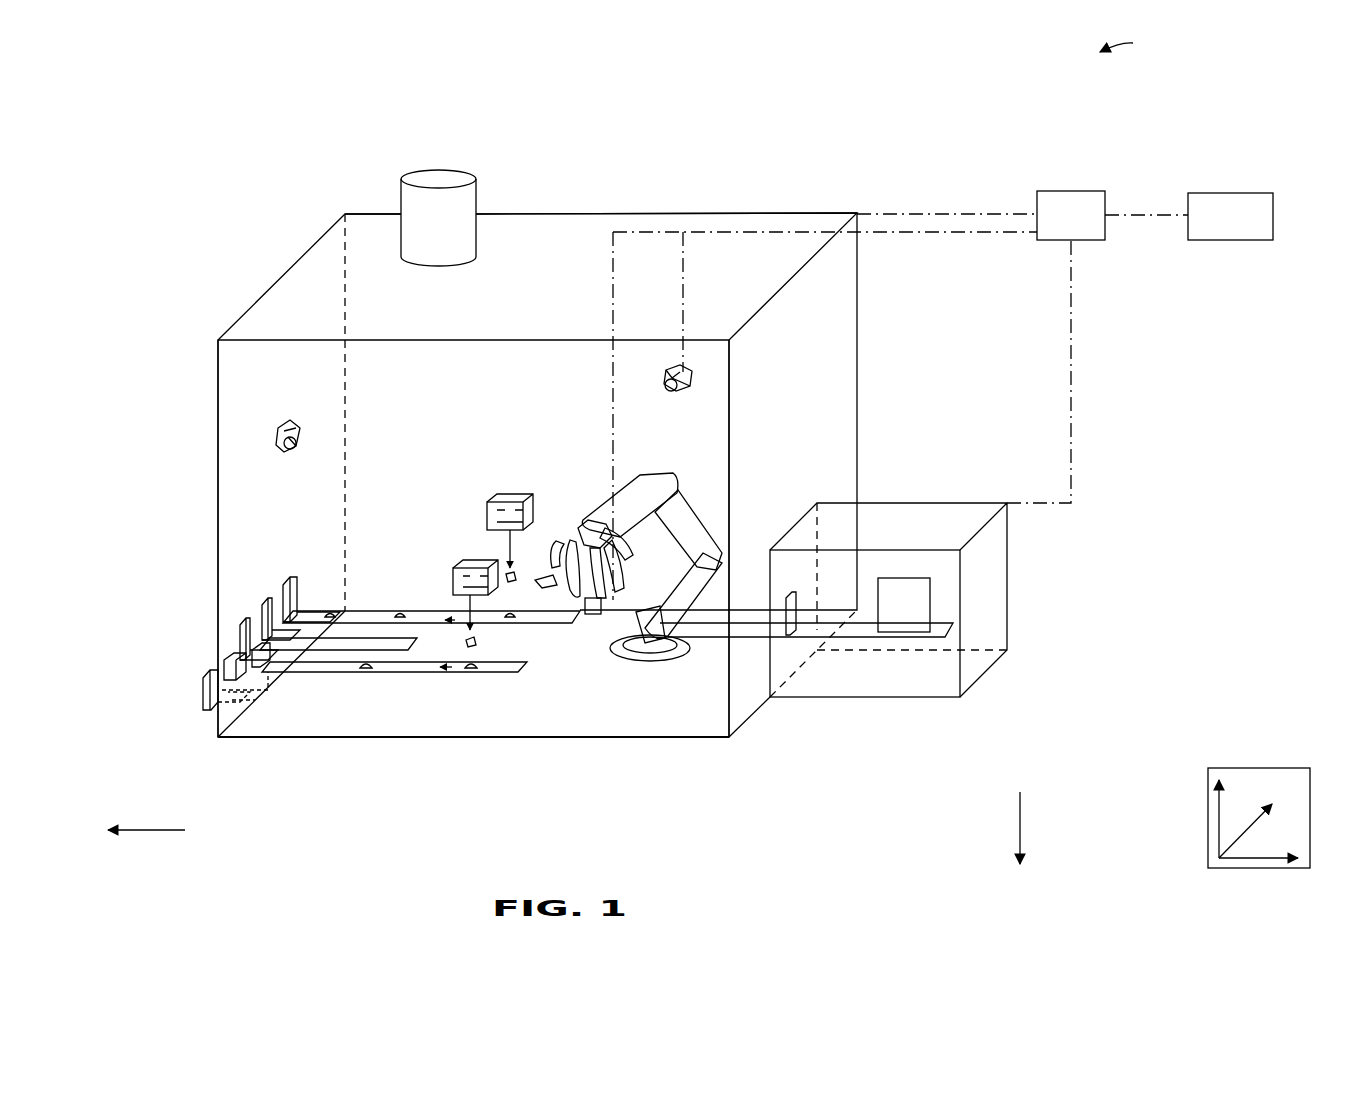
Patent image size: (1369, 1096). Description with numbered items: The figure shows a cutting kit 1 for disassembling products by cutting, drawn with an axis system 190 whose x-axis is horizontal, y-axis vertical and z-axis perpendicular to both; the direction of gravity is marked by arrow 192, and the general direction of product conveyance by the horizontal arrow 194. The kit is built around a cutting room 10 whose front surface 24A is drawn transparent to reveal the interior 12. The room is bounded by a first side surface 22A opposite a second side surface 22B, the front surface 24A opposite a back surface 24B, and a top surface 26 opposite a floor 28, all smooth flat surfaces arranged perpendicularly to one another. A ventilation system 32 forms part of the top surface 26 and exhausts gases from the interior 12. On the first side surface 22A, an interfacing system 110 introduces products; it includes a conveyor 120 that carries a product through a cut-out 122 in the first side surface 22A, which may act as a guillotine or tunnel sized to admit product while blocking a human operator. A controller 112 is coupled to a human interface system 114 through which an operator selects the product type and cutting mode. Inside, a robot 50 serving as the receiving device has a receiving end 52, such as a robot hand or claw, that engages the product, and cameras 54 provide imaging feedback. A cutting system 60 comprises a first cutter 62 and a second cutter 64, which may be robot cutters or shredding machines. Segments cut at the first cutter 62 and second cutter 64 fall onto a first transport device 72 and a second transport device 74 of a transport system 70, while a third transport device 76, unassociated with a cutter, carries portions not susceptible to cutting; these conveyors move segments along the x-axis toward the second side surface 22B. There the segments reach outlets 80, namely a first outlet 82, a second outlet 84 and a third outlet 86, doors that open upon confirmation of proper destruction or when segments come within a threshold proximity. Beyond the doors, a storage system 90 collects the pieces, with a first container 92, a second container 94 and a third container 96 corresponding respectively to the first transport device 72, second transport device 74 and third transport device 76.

The cutting kit 1 is at (1131, 42).
The cutting room 10 is at (500, 210).
The interior 12 is at (237, 497).
The first side surface 22A is at (840, 342).
The second side surface 22B is at (218, 324).
The front surface 24A is at (440, 718).
The back surface 24B is at (645, 176).
The top surface 26 is at (601, 255).
The floor 28 is at (473, 718).
The ventilation system 32 is at (416, 170).
The robot 50 is at (660, 468).
The receiving end 52 is at (566, 552).
The cameras 54 is at (290, 421).
The cutting system 60 is at (523, 468).
The first cutter 62 is at (462, 560).
The second cutter 64 is at (495, 494).
The transport system 70 is at (393, 582).
The first transport device 72 is at (512, 648).
The second transport device 74 is at (540, 596).
The third transport device 76 is at (418, 640).
The outlets 80 is at (272, 560).
The first outlet 82 is at (256, 650).
The second outlet 84 is at (292, 586).
The third outlet 86 is at (248, 610).
The storage system 90 is at (182, 712).
The first container 92 is at (206, 677).
The second container 94 is at (258, 640).
The third container 96 is at (228, 658).
The interfacing system 110 is at (897, 500).
The controller 112 is at (981, 215).
The human interface system 114 is at (1189, 216).
The conveyor 120 is at (885, 640).
The cut-out 122 is at (790, 596).
The axis system 190 is at (1310, 788).
The gravity 192 is at (1020, 806).
The horizontal arrow 194 is at (146, 828).